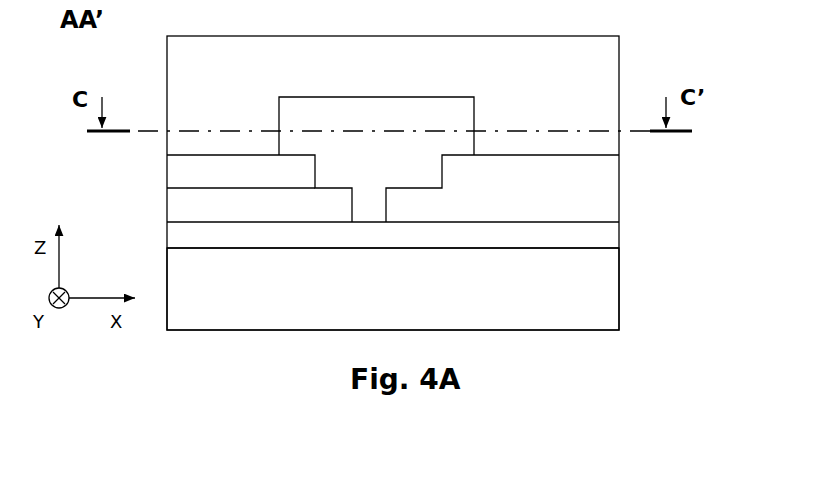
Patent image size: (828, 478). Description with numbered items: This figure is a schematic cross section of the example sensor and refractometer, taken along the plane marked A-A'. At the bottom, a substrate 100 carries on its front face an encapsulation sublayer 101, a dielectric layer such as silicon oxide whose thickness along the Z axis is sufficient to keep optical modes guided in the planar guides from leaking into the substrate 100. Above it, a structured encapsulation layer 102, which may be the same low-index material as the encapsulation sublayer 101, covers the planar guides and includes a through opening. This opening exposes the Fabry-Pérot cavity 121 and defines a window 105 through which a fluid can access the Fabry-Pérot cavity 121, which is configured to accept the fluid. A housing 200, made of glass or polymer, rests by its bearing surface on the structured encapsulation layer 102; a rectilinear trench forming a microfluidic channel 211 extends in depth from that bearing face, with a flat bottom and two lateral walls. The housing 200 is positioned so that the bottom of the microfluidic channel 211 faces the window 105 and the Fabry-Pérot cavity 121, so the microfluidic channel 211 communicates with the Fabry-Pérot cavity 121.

The housing 200 is at (593, 67).
The microfluidic channel 211 is at (302, 120).
The structured encapsulation layer 102 is at (593, 172).
The window 105 is at (365, 172).
The Fabry-Pérot cavity 121 is at (368, 210).
The encapsulation sublayer 101 is at (593, 237).
The substrate 100 is at (593, 308).